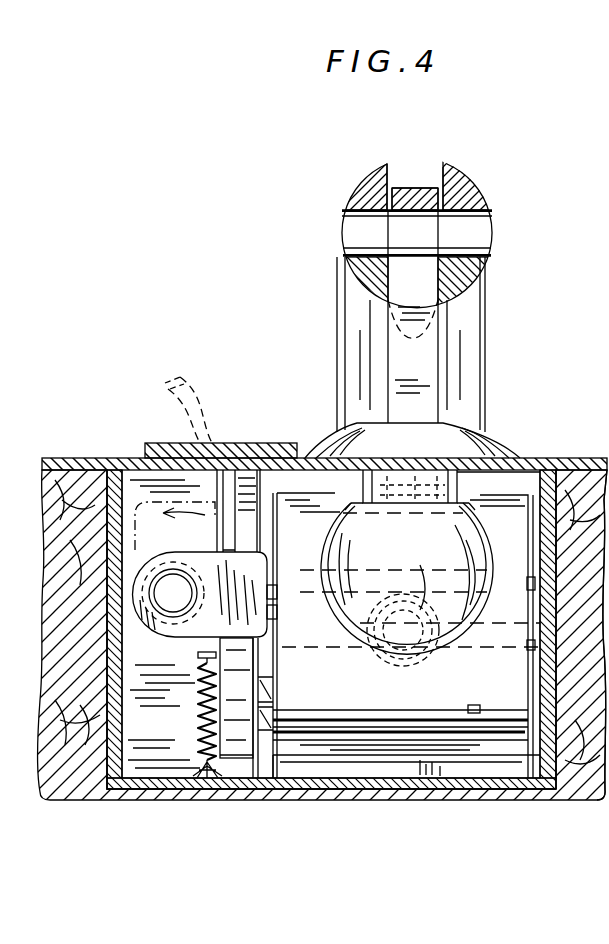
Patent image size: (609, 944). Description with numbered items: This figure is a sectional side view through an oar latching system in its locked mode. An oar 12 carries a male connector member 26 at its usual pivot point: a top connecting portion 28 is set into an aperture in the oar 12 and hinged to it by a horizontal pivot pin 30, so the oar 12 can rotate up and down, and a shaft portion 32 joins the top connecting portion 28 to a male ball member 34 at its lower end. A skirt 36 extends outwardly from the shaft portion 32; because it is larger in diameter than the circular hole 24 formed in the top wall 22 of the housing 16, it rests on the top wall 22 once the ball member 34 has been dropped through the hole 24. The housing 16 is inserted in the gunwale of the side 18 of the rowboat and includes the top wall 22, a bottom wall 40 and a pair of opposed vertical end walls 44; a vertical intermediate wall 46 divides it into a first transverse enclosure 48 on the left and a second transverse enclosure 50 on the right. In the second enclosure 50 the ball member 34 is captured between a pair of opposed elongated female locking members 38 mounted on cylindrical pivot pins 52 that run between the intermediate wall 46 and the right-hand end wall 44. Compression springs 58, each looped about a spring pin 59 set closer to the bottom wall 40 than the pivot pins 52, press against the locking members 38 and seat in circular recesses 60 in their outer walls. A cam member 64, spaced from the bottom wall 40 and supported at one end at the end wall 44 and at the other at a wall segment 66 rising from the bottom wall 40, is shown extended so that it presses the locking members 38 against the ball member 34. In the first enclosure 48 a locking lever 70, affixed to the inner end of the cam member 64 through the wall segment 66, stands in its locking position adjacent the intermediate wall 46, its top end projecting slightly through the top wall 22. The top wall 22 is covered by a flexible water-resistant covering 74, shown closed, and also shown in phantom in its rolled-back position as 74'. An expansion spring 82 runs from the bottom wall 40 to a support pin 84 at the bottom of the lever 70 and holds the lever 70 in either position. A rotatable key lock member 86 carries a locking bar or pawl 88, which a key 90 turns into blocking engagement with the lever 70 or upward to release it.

The oar 12 is at (470, 204).
The horizontal pivot pin 30 is at (482, 246).
The male connector member 26 is at (333, 378).
The top connecting portion 28 is at (430, 368).
The skirt 36 is at (455, 435).
The circular hole 24 is at (493, 456).
The second transverse enclosure 50 is at (548, 478).
The top wall 22 is at (527, 482).
The female locking members 38 is at (552, 474).
The shaft portion 32 is at (458, 490).
The locking lever 70 is at (238, 444).
The flexible water-resistant covering 74 is at (256, 484).
The covering in rolled-back position 74' is at (194, 404).
The vertical intermediate wall 46 is at (250, 565).
The rotatable key lock member 86 is at (150, 585).
The key 90 is at (175, 575).
The locking bar or pawl 88 is at (250, 604).
The male ball member 34 is at (392, 560).
The cylindrical pivot pins 52 is at (530, 575).
The spring pin 59 is at (532, 640).
The circular recesses 60 is at (377, 664).
The compression springs 58 is at (429, 665).
The cam member 64 is at (432, 712).
The support pin 84 is at (197, 656).
The expansion spring 82 is at (205, 716).
The wall segment 66 is at (273, 692).
The bottom wall 40 is at (450, 778).
The side of the rowboat 18 is at (58, 578).
The vertical end walls 44 is at (110, 625).
The housing 16 is at (100, 683).
The first transverse enclosure 48 is at (135, 700).